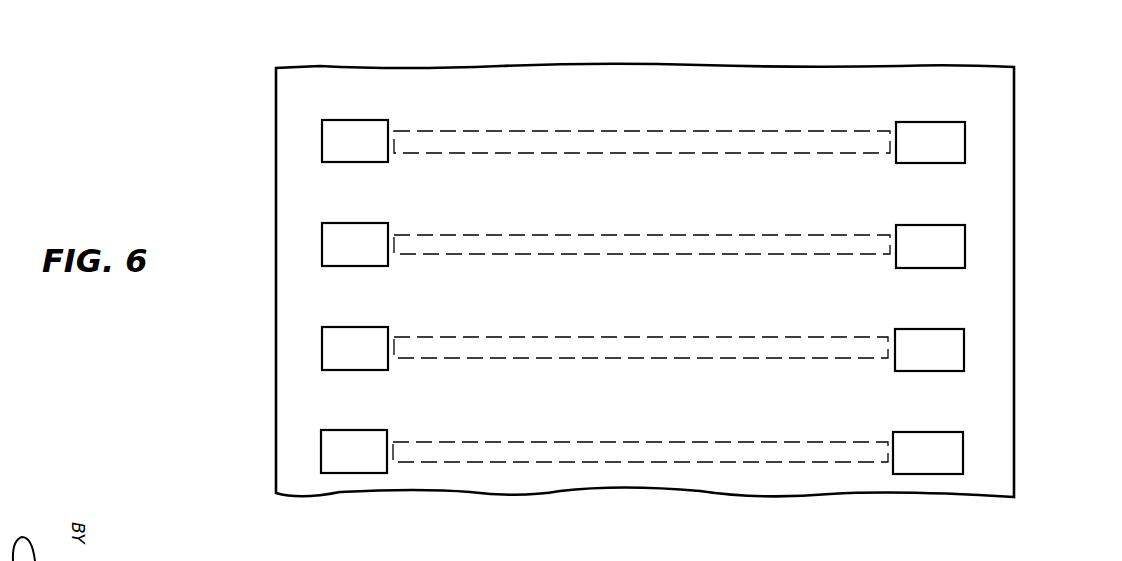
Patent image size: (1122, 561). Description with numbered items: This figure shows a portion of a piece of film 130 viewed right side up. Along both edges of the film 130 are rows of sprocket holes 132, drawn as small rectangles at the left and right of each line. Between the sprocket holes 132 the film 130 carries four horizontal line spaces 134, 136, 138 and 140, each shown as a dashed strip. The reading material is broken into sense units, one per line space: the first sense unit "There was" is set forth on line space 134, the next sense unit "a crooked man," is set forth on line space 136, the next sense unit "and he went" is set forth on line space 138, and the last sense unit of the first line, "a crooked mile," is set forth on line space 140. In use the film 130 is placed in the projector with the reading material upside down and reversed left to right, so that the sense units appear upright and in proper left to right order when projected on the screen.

The film 130 is at (1017, 100).
The sprocket holes 132 is at (322, 138).
The line space 134 is at (782, 132).
The line space 136 is at (783, 255).
The line space 138 is at (762, 359).
The line space 140 is at (710, 463).